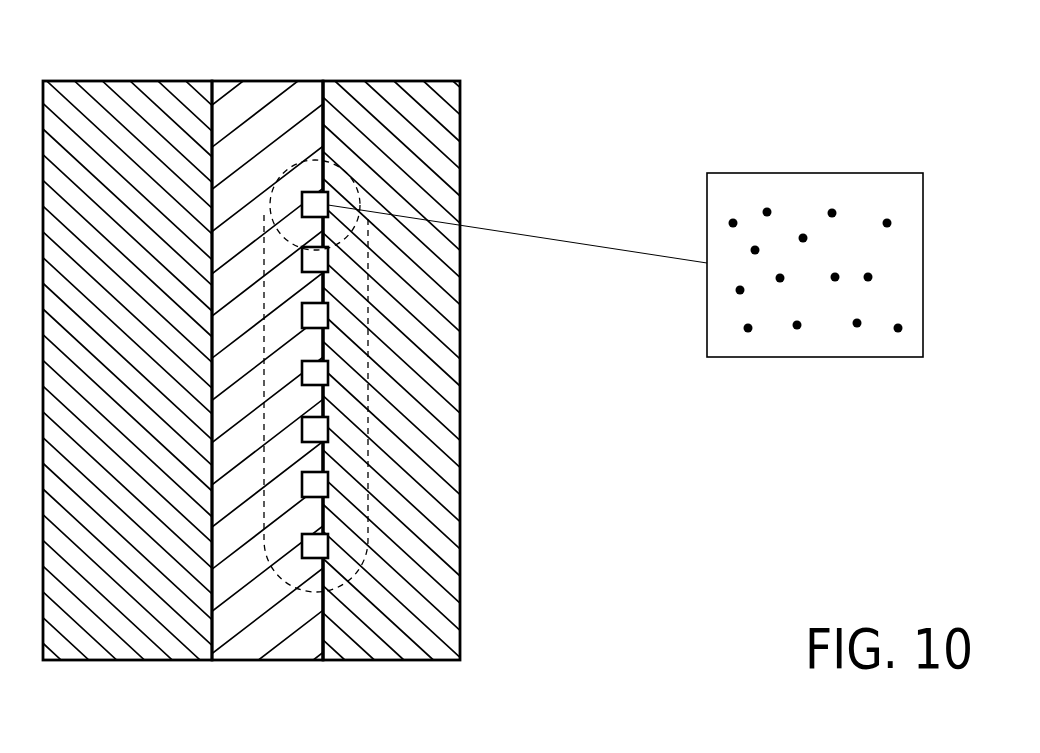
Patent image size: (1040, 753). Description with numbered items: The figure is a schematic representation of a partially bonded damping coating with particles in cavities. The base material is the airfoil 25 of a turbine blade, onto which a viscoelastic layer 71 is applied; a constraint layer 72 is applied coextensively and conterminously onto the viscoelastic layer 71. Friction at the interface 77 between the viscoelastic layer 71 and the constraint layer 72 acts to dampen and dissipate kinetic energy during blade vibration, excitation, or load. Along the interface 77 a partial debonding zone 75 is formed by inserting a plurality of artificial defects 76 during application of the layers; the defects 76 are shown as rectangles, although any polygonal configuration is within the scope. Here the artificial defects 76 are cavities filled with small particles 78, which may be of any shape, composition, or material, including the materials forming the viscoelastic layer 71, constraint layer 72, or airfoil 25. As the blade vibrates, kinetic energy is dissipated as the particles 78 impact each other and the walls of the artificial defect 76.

The airfoil 25 is at (153, 181).
The viscoelastic layer 71 is at (263, 81).
The constraint layer 72 is at (410, 81).
The partial debonding zone 75 is at (411, 292).
The artificial defect 76 is at (821, 430).
The interface 77 is at (323, 112).
The particles 78 is at (903, 231).